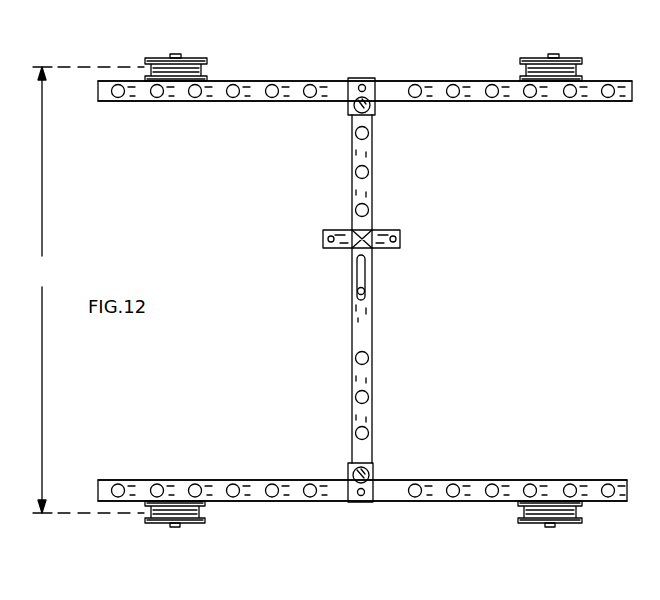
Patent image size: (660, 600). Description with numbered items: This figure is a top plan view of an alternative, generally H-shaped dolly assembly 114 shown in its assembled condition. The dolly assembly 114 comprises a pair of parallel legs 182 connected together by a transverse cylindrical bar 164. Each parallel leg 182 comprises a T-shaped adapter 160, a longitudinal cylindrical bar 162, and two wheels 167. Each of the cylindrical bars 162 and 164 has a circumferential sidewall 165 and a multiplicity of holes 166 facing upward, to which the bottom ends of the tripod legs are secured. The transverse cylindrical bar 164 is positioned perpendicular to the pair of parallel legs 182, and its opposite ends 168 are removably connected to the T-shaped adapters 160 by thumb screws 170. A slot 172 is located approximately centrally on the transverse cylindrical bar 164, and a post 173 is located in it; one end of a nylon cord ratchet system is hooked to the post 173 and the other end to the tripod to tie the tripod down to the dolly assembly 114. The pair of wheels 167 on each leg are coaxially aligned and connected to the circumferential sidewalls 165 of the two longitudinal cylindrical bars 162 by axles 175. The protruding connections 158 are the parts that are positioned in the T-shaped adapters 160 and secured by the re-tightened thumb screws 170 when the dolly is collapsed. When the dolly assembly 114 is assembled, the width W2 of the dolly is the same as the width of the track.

The dolly assembly 114 is at (548, 222).
The protruding connections 158 is at (327, 232).
The T-shaped adapter 160 is at (370, 79).
The longitudinal cylindrical bar 162 is at (219, 108).
The transverse cylindrical bar 164 is at (382, 320).
The circumferential sidewall 165 is at (516, 102).
The holes 166 is at (413, 96).
The wheels 167 is at (204, 60).
The opposite ends 168 is at (350, 120).
The thumb screws 170 is at (348, 96).
The slot 172 is at (367, 264).
The post 173 is at (367, 292).
The axles 175 is at (174, 528).
The parallel legs 182 is at (465, 76).
The width of the dolly W2 is at (88, 290).